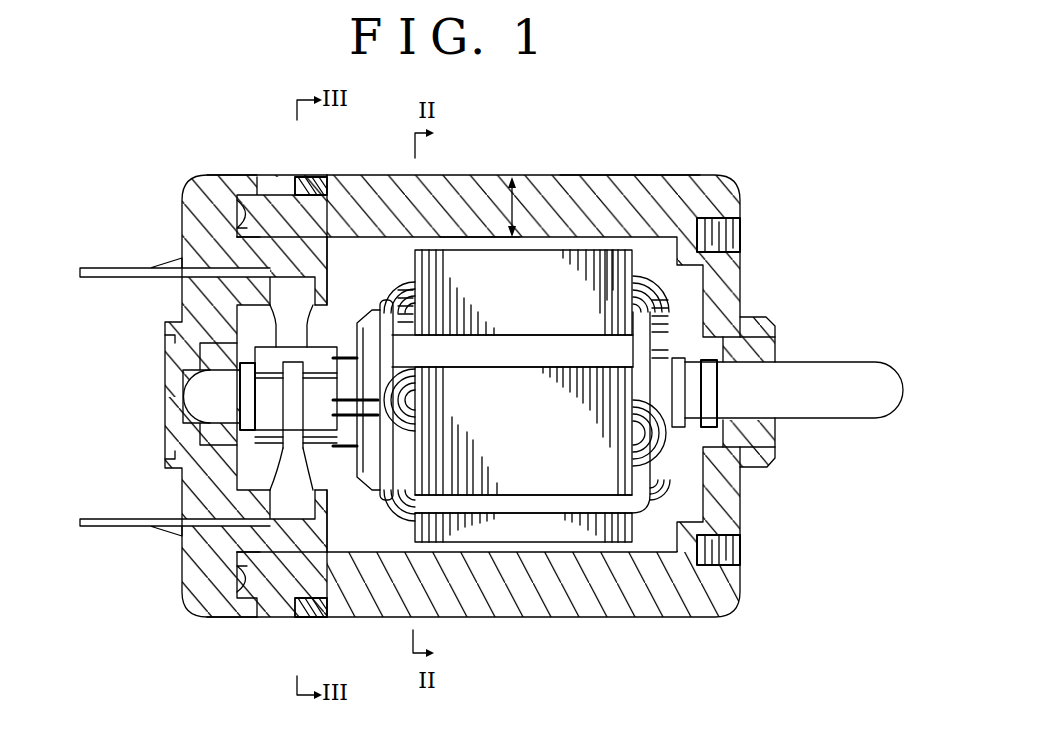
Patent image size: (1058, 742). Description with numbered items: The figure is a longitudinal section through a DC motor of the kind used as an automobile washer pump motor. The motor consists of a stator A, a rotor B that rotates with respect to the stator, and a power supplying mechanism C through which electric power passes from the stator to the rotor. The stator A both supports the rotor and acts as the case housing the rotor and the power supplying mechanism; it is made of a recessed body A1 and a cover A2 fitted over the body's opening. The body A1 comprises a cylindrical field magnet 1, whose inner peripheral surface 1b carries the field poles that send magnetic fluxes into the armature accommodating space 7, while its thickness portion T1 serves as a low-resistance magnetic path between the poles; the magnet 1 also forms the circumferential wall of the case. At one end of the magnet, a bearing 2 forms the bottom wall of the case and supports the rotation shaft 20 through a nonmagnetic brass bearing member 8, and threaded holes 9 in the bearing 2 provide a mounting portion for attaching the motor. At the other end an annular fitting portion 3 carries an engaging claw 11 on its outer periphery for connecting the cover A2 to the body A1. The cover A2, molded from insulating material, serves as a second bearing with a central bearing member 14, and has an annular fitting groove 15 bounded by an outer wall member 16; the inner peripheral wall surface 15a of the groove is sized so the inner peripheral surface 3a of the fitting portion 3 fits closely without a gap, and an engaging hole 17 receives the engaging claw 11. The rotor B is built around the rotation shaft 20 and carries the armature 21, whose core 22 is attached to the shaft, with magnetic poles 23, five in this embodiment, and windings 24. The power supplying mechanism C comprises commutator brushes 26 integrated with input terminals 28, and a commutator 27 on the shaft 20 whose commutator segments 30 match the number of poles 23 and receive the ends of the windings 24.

The field magnet 1 is at (453, 195).
The inner peripheral surface 1b is at (468, 244).
The bearing 2 is at (742, 273).
The fitting portion 3 is at (303, 213).
The inner peripheral surface of the fitting portion 3a is at (323, 240).
The armature accommodating space 7 is at (540, 245).
The bearing member 8 is at (775, 348).
The threaded holes 9 is at (742, 224).
The engaging claw 11 is at (288, 180).
The bearing member 14 is at (165, 362).
The fitting groove 15 is at (237, 203).
The inner peripheral wall surface 15a is at (237, 237).
The outer wall member 16 is at (308, 177).
The engaging hole 17 is at (272, 180).
The rotation shaft 20 is at (853, 376).
The armature 21 is at (540, 551).
The core 22 is at (570, 547).
The magnetic poles 23 is at (585, 285).
The windings 24 is at (650, 280).
The commutator brushes 26 is at (287, 333).
The commutator 27 is at (255, 404).
The input terminals 28 is at (106, 277).
The commutator segments 30 is at (296, 413).
The stator A is at (706, 178).
The body A1 is at (674, 172).
The cover A2 is at (182, 222).
The rotor B is at (650, 520).
The power supplying mechanism C is at (256, 437).
The thickness portion T1 is at (512, 180).